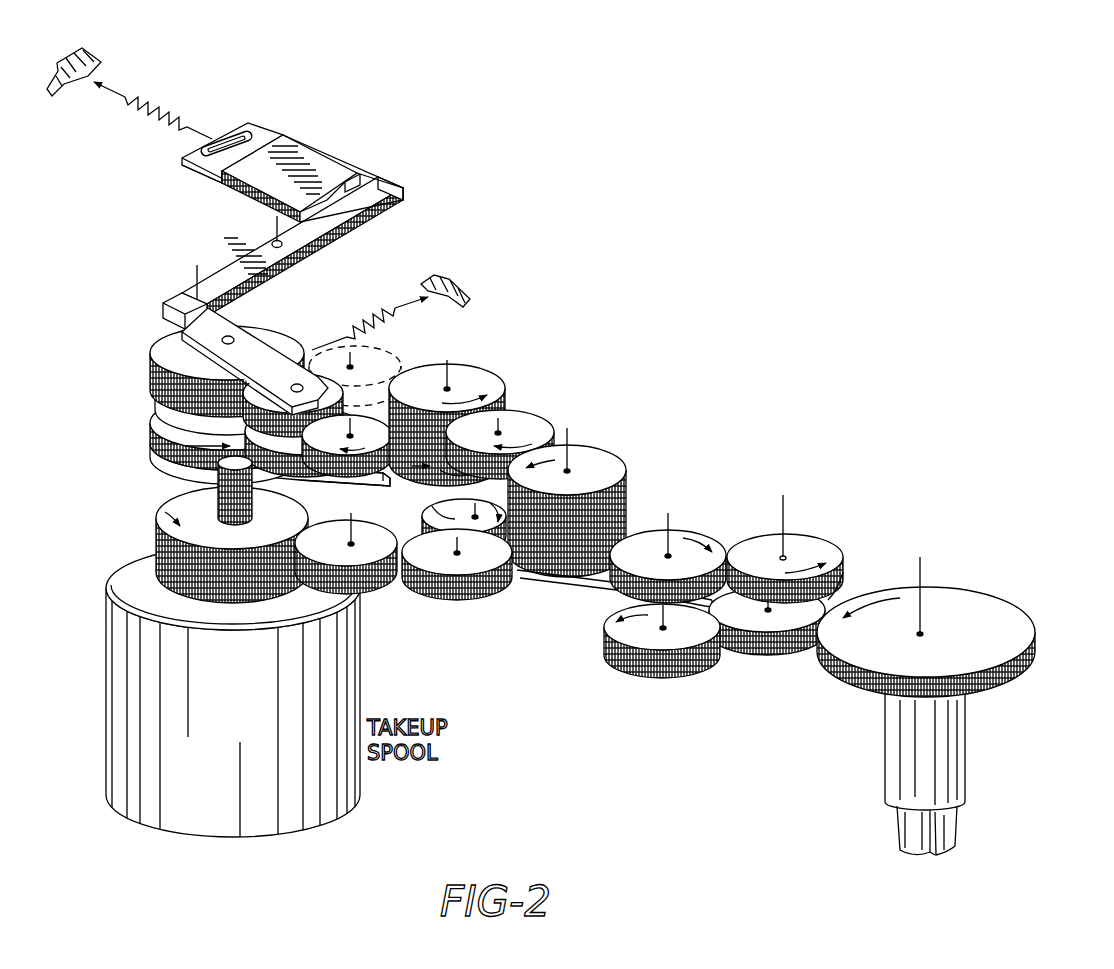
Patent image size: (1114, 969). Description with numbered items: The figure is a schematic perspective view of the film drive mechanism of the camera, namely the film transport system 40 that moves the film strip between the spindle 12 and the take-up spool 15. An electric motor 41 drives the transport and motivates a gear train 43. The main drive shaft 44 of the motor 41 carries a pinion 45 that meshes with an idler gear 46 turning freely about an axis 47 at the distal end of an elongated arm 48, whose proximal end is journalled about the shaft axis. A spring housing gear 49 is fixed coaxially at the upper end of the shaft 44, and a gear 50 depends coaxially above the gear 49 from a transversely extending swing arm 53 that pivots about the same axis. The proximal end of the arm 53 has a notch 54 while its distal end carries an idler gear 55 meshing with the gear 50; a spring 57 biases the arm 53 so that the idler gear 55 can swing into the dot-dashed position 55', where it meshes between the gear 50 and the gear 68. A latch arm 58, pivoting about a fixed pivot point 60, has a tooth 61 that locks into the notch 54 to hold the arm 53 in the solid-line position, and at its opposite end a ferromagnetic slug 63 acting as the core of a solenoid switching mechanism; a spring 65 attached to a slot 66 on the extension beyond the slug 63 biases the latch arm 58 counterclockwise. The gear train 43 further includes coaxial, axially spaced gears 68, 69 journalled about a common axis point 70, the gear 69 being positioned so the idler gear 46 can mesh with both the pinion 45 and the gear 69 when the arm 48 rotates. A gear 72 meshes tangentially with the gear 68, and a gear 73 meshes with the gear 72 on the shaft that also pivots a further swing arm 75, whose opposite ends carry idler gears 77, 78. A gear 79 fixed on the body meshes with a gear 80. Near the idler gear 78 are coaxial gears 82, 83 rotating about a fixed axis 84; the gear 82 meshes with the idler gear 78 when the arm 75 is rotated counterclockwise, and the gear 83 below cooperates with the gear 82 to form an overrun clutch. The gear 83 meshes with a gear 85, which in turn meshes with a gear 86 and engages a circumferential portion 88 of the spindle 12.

The spindle 12 is at (897, 778).
The take-up spool 15 is at (115, 747).
The film transport system 40 is at (778, 418).
The electric motor 41 is at (165, 512).
The gear train 43 is at (590, 640).
The main drive shaft 44 is at (223, 473).
The pinion 45 is at (149, 420).
The idler gear 46 is at (362, 479).
The axis 47 is at (312, 480).
The elongated arm 48 is at (188, 463).
The spring housing gear 49 is at (150, 383).
The gear 50 is at (149, 355).
The swing arm 53 is at (275, 330).
The notch 54 is at (177, 297).
The idler gear 55 is at (264, 407).
The position of idler gear 55' is at (380, 366).
The spring 57 is at (394, 310).
The latch arm 58 is at (343, 232).
The pivot point 60 is at (276, 234).
The tooth 61 is at (193, 269).
The slug 63 is at (320, 163).
The spring 65 is at (167, 103).
The slot 66 is at (243, 130).
The gear 68 is at (491, 377).
The gear 69 is at (452, 467).
The common axis point 70 is at (452, 387).
The gear 72 is at (542, 418).
The gear 73 is at (610, 466).
The swing arm 75 is at (582, 585).
The idler gear 77 is at (445, 518).
The idler gear 78 is at (723, 535).
The gear 79 is at (377, 593).
The gear 80 is at (433, 597).
The gear 82 is at (825, 542).
The gear 83 is at (840, 605).
The fixed axis 84 is at (785, 518).
The gear 85 is at (772, 647).
The gear 86 is at (692, 677).
The circumferential portion 88 is at (1020, 623).